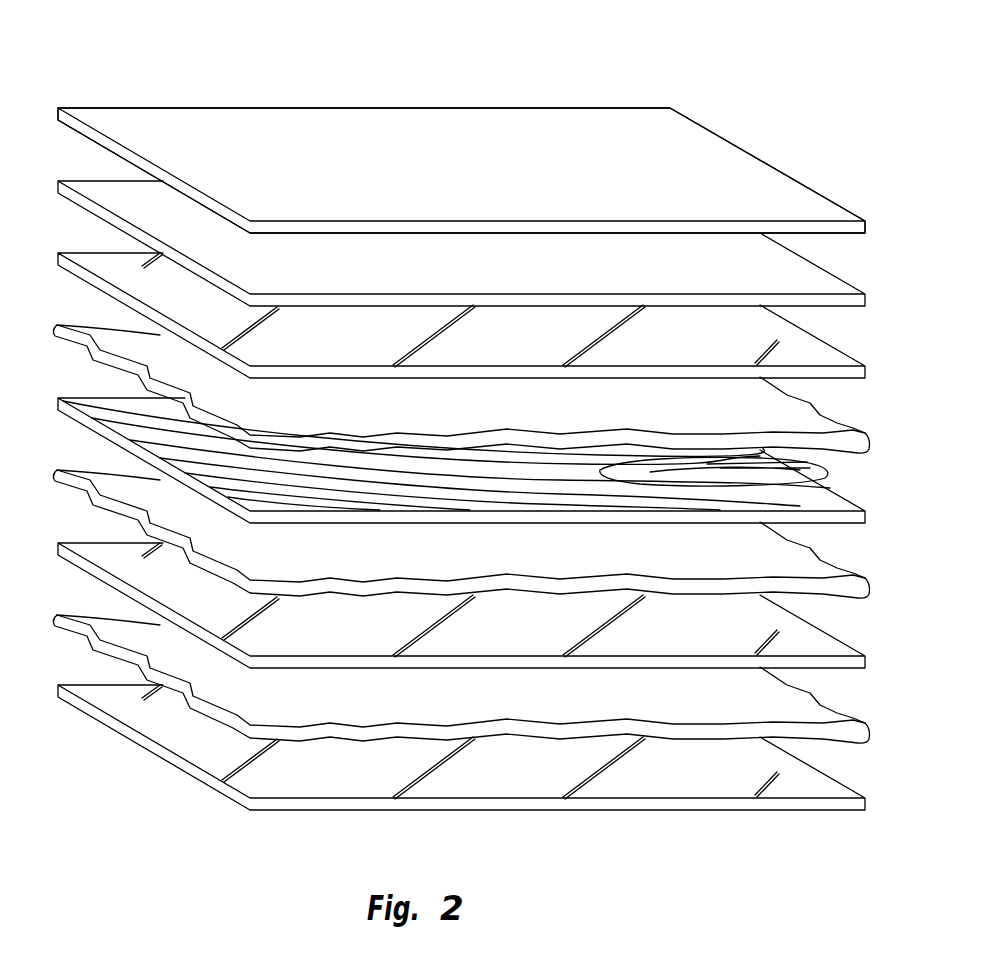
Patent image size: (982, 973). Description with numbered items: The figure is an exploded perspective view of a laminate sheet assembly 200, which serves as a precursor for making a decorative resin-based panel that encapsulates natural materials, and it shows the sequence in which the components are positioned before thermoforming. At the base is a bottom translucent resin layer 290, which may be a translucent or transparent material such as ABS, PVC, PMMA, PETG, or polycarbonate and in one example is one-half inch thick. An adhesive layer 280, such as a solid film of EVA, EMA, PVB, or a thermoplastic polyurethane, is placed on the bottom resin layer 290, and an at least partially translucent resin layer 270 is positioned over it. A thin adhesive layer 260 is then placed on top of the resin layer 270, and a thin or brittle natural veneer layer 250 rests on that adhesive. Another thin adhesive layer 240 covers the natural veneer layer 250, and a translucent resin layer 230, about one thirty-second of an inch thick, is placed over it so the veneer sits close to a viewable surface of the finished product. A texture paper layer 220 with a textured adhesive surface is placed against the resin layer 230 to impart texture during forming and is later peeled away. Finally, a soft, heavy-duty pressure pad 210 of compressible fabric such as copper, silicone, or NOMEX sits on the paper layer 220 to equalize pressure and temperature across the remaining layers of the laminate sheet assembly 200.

The laminate sheet assembly 200 is at (146, 62).
The pressure pad 210 is at (58, 114).
The texture paper layer 220 is at (58, 187).
The translucent resin layer 230 is at (58, 259).
The adhesive layer 240 is at (58, 331).
The natural veneer layer 250 is at (58, 404).
The adhesive layer 260 is at (58, 476).
The translucent resin layer 270 is at (58, 549).
The adhesive layer 280 is at (58, 621).
The bottom translucent resin layer 290 is at (58, 691).